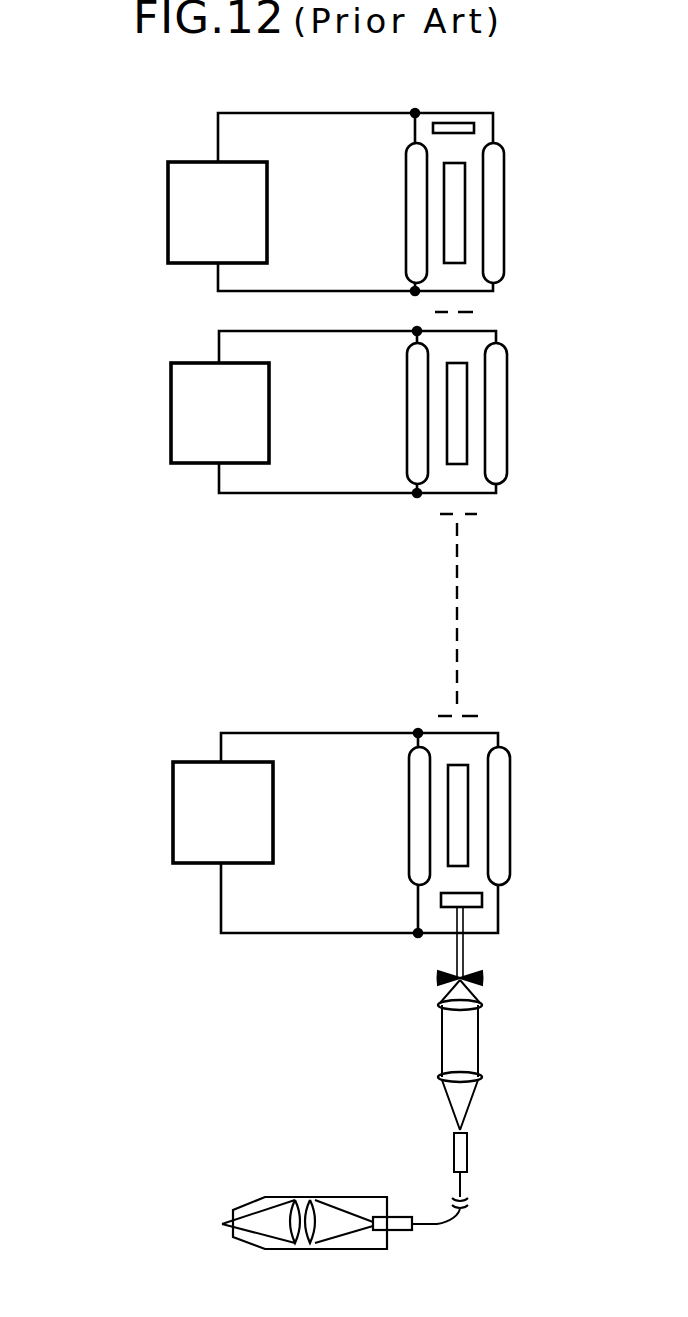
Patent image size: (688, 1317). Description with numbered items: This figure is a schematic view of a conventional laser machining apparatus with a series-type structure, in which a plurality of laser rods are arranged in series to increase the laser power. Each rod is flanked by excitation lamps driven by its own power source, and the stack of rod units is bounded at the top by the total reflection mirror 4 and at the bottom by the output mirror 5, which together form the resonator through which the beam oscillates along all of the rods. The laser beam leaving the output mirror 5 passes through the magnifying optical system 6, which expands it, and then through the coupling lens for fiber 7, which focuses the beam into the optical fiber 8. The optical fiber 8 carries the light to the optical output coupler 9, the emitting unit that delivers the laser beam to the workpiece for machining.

The total reflection mirror 4 is at (471, 122).
The output mirror 5 is at (482, 900).
The magnifying optical system 6 is at (482, 978).
The coupling lens for fiber 7 is at (482, 1077).
The optical fiber 8 is at (458, 1212).
The optical output coupler (emitting unit) 9 is at (345, 1197).